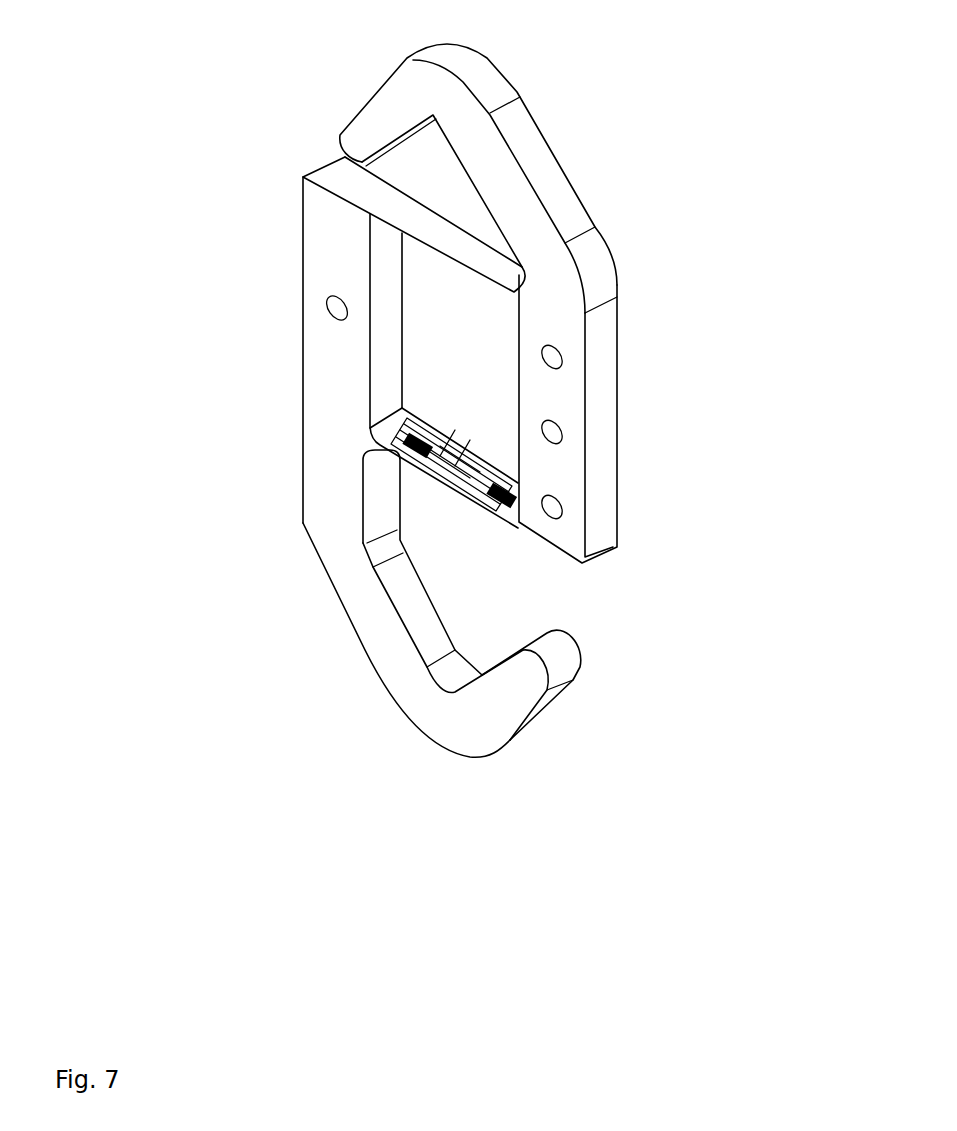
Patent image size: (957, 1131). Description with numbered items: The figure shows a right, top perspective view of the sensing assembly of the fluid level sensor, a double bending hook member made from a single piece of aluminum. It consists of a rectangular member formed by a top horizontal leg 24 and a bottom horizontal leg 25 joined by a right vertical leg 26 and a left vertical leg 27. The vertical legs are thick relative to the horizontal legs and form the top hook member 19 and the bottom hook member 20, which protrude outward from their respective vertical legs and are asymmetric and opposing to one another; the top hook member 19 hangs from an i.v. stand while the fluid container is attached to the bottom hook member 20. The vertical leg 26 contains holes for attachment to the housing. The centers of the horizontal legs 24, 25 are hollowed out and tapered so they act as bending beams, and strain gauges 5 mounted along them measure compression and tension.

The top hook member 19 is at (545, 163).
The top horizontal leg 24 is at (437, 230).
The left vertical leg 27 is at (303, 410).
The right vertical leg 26 is at (595, 410).
The bottom horizontal leg 25 is at (503, 520).
The strain gauge 5 is at (518, 483).
The bottom hook member 20 is at (383, 655).